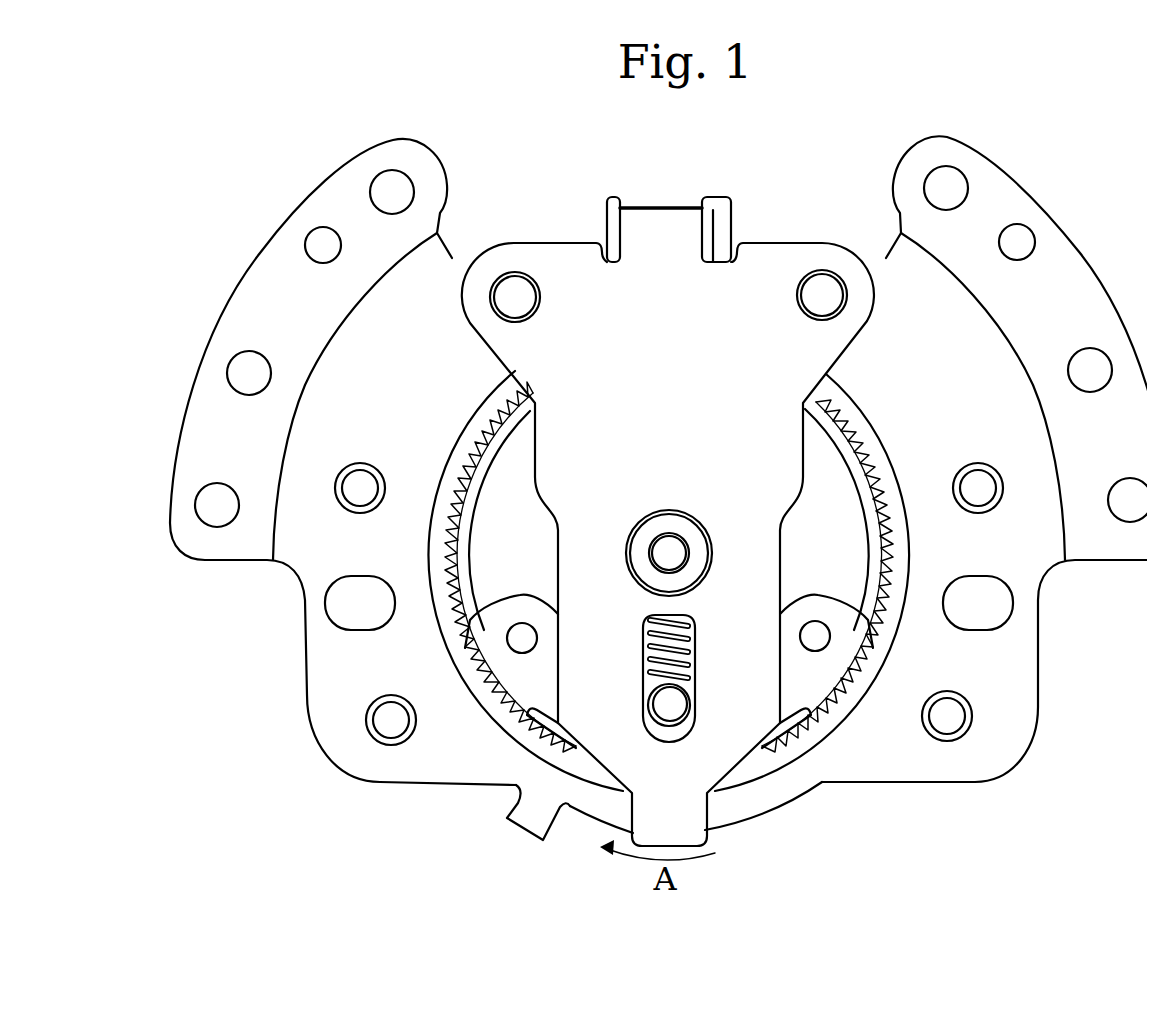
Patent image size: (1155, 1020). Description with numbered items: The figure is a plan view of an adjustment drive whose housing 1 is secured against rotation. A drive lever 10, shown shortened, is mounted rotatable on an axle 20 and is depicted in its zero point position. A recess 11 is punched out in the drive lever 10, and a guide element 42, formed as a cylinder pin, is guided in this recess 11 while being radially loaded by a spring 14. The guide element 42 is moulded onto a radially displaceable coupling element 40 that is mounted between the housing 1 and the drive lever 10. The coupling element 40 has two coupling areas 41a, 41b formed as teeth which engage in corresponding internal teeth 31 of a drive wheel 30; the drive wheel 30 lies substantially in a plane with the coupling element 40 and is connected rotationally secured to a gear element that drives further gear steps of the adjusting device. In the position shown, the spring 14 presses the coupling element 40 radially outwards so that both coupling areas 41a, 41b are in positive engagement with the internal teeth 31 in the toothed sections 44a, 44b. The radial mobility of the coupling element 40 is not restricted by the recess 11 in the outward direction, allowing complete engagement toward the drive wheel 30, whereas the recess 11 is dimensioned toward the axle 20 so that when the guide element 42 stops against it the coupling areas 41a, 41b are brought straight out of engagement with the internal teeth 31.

The housing 1 is at (1014, 656).
The drive lever 10 is at (668, 534).
The recess 11 is at (696, 633).
The spring 14 is at (687, 667).
The axle 20 is at (669, 553).
The drive wheel 30 is at (798, 752).
The internal teeth 31 is at (542, 746).
The coupling element 40 is at (718, 612).
The coupling area 41a is at (845, 638).
The coupling area 41b is at (488, 653).
The guide element 42 is at (657, 705).
The toothed section 44a is at (880, 646).
The toothed section 44b is at (487, 698).